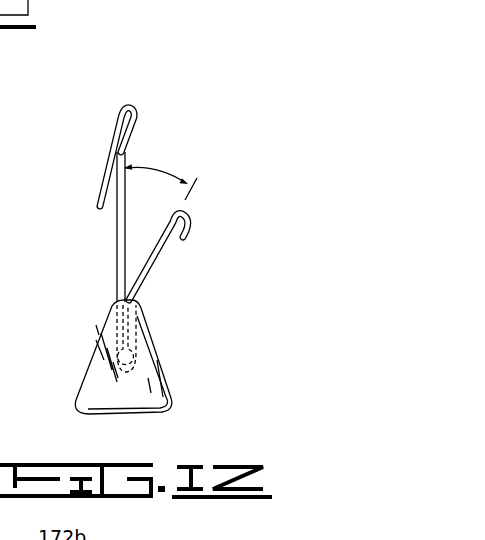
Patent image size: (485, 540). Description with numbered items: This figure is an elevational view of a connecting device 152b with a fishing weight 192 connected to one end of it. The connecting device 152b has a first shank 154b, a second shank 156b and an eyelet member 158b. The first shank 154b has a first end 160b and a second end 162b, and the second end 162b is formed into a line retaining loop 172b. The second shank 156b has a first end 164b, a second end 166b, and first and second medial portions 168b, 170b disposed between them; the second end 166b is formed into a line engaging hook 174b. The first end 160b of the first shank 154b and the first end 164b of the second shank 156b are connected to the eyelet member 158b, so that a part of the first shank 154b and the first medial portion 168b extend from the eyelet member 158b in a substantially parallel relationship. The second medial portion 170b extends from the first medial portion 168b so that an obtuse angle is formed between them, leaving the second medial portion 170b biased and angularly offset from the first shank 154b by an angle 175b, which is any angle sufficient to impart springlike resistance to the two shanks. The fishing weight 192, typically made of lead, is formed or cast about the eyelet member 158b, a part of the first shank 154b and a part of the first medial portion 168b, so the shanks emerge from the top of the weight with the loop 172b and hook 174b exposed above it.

The connecting device 152b is at (219, 51).
The first shank 154b is at (115, 238).
The second shank 156b is at (210, 244).
The eyelet member 158b is at (141, 367).
The first end of the first shank 160b is at (125, 351).
The second end of the first shank 162b is at (90, 77).
The first end of the second shank 164b is at (143, 340).
The second end of the second shank 166b is at (184, 213).
The first medial portion 168b is at (137, 326).
The second medial portion 170b is at (166, 257).
The line retaining loop 172b is at (125, 135).
The line engaging hook 174b is at (195, 222).
The angle 175b is at (166, 176).
The fishing weight 192 is at (105, 325).